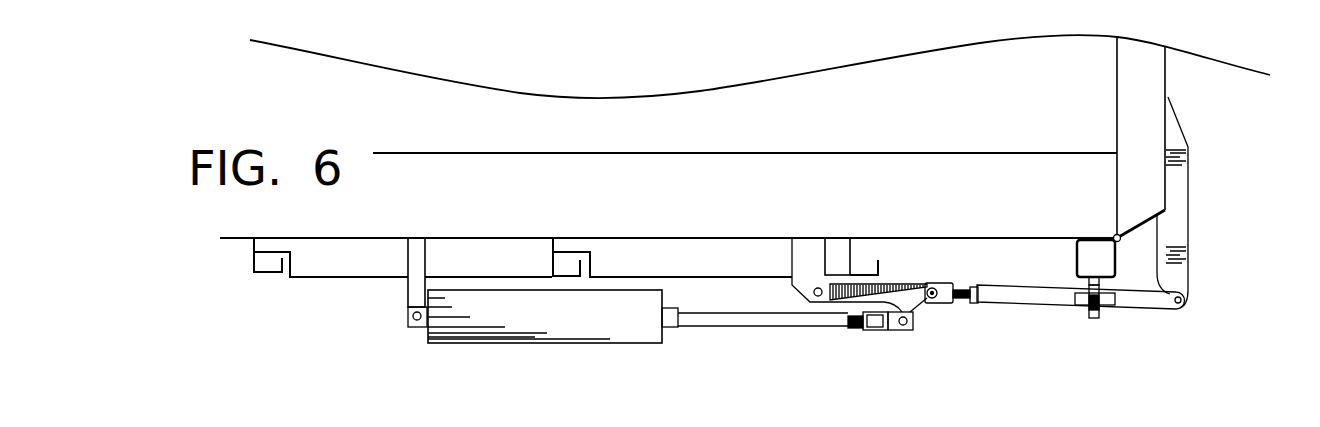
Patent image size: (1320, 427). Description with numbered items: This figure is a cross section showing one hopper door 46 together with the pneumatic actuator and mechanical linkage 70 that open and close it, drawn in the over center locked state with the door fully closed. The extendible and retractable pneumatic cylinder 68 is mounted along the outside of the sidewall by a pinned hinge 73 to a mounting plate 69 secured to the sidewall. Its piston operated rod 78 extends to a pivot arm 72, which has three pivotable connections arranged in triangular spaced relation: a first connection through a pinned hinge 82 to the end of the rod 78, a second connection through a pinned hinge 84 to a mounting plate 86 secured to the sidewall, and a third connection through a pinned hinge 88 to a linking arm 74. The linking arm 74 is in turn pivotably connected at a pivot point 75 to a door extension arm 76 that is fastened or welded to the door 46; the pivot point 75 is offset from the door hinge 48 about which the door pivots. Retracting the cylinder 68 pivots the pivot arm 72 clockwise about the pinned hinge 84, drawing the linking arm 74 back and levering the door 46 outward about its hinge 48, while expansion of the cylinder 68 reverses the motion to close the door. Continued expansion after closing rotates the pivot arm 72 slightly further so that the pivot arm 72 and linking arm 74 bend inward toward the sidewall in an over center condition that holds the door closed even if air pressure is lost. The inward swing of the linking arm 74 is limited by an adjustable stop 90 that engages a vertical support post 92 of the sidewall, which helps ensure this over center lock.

The door 46 is at (1157, 79).
The hinge 48 is at (1113, 236).
The pneumatic cylinder 68 is at (578, 325).
The mounting plate 69 is at (422, 288).
The mechanical linkage 70 is at (867, 342).
The pivot arm 72 is at (922, 300).
The pinned hinge 73 is at (417, 319).
The linking arm 74 is at (1007, 297).
The pivot point 75 is at (1180, 303).
The door extension arm 76 is at (1180, 222).
The rod 78 is at (737, 322).
The pinned hinge 82 is at (905, 312).
The pinned hinge 84 is at (818, 300).
The mounting plate 86 is at (803, 262).
The pinned hinge 88 is at (935, 287).
The adjustable stop 90 is at (1095, 310).
The vertical support post 92 is at (1075, 262).